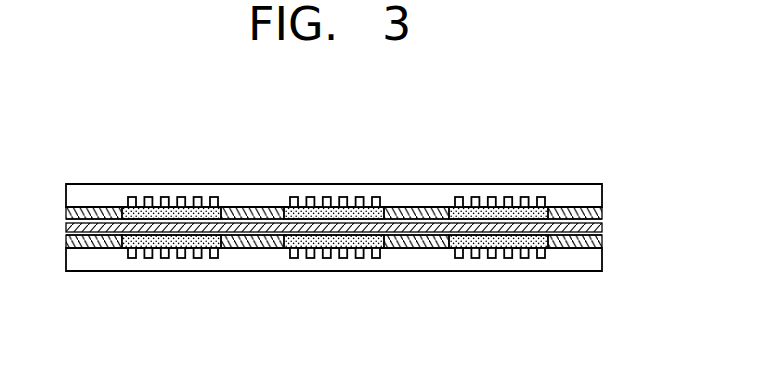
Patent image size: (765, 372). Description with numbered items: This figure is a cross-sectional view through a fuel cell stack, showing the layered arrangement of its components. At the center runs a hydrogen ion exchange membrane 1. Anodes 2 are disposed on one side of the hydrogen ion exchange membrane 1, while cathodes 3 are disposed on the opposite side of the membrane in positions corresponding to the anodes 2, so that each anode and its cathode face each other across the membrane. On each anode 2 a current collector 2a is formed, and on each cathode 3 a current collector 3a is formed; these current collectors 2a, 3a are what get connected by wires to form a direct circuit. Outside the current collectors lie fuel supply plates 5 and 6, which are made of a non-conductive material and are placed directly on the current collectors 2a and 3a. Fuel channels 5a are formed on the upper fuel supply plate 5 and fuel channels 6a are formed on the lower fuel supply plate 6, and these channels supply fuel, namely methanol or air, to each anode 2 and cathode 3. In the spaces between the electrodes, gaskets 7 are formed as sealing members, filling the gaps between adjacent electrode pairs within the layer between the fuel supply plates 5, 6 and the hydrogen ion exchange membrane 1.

The hydrogen ion exchange membrane 1 is at (593, 232).
The anode 2 is at (146, 203).
The current collector 2a is at (128, 207).
The cathode 3 is at (168, 258).
The current collector 3a is at (132, 258).
The fuel supply plate 5 is at (585, 196).
The fuel channel 5a is at (185, 202).
The fuel supply plate 6 is at (592, 262).
The fuel channel 6a is at (195, 258).
The gasket 7 is at (88, 207).